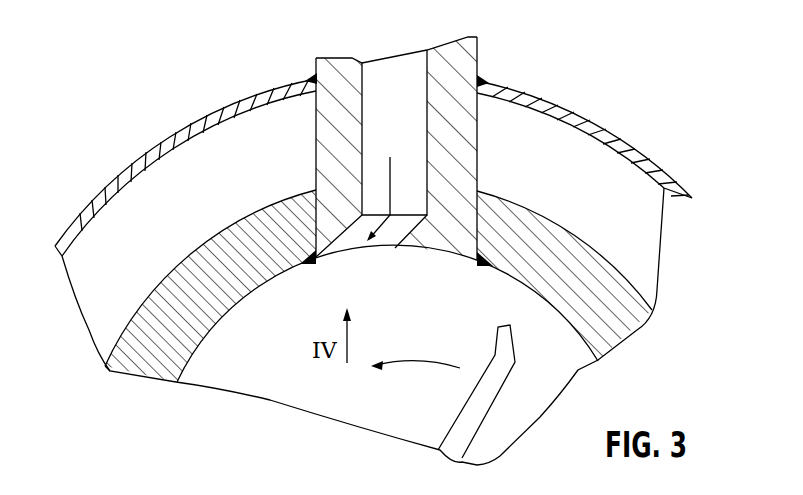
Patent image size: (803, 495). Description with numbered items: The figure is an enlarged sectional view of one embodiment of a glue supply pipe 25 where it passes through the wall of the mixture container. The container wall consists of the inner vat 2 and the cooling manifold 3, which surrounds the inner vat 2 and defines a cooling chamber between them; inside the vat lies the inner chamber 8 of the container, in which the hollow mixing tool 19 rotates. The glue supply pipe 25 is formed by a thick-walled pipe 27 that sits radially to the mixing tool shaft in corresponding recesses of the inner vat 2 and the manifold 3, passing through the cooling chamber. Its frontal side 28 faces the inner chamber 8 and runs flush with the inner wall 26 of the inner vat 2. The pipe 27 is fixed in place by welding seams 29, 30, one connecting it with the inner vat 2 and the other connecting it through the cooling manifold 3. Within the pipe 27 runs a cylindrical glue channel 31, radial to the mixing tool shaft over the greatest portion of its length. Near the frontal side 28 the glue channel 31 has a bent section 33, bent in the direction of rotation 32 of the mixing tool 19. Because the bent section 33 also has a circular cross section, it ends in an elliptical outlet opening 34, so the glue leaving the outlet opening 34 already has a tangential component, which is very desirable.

The inner vat 2 is at (577, 262).
The cooling manifold 3 is at (632, 148).
The inner chamber 8 is at (251, 372).
The mixing tool 19 is at (495, 396).
The glue supply pipe 25 is at (490, 51).
The inner wall 26 is at (533, 290).
The thick-walled pipe 27 is at (466, 65).
The frontal side 28 is at (448, 256).
The welding seam 29 is at (313, 259).
The welding seam 30 is at (316, 78).
The glue channel 31 is at (402, 67).
The direction of rotation 32 is at (418, 362).
The bent section 33 is at (355, 240).
The outlet opening 34 is at (373, 252).